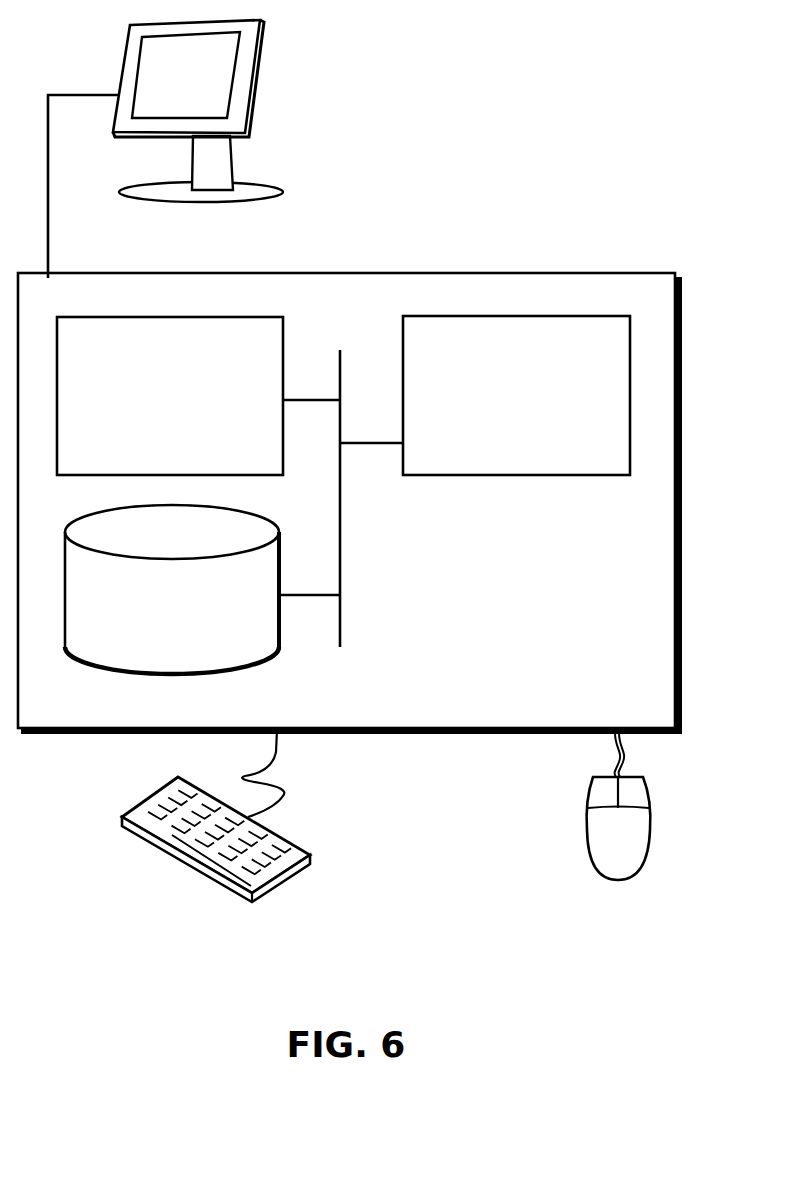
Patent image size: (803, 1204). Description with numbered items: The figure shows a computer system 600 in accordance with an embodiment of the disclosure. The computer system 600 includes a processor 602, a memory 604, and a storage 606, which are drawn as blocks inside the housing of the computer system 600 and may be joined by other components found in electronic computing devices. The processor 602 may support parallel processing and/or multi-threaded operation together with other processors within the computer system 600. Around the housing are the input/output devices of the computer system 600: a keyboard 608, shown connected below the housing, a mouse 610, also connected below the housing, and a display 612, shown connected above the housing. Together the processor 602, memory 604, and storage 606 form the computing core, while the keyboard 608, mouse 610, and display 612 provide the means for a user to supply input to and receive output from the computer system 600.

The computer system 600 is at (393, 252).
The processor 602 is at (501, 408).
The memory 604 is at (151, 408).
The storage 606 is at (158, 620).
The keyboard 608 is at (140, 838).
The mouse 610 is at (599, 850).
The display 612 is at (165, 149).